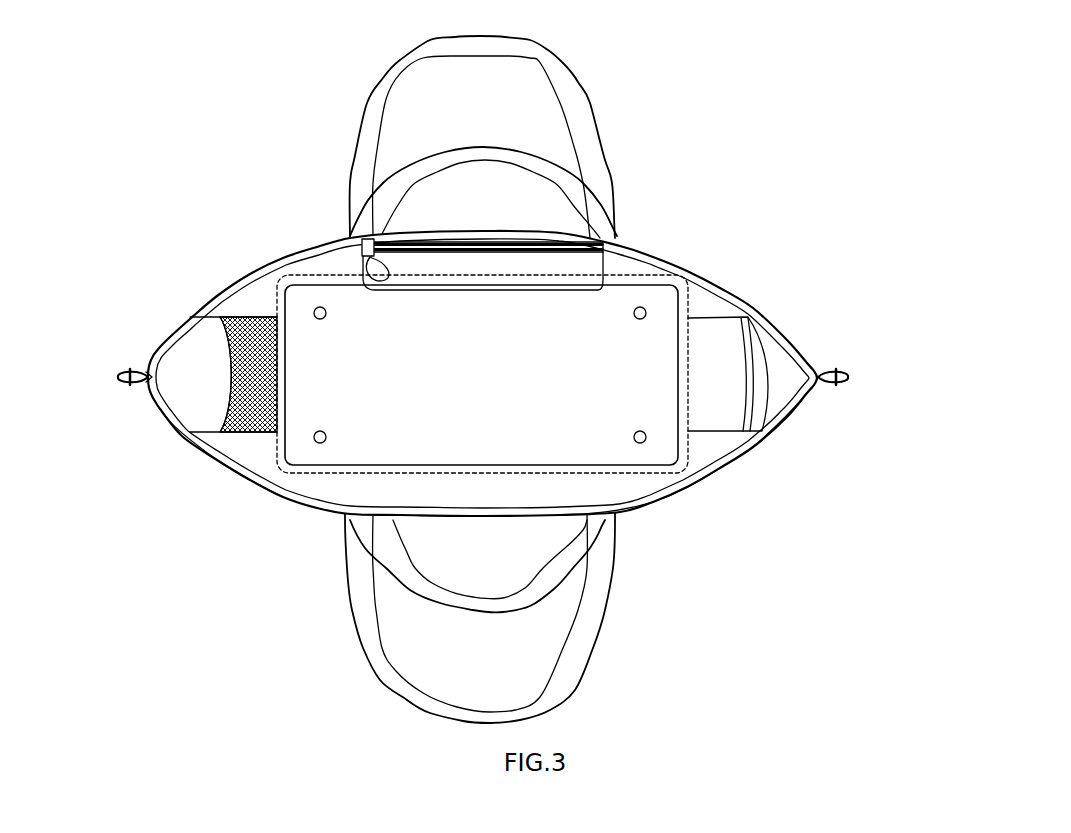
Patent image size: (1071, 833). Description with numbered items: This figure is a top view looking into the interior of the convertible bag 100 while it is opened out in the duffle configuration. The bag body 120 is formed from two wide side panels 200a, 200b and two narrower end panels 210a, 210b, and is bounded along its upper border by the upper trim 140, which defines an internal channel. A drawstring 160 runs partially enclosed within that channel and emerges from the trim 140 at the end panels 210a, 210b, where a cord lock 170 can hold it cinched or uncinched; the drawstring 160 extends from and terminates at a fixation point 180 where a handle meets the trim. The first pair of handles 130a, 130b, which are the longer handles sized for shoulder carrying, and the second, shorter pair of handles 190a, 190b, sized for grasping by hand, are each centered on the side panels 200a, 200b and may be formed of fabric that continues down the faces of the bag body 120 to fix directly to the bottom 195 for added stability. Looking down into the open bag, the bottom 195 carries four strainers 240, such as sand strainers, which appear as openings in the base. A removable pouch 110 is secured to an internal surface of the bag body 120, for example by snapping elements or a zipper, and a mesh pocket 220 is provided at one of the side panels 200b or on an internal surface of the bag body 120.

The convertible bag 100 is at (858, 168).
The removable pouch 110 is at (318, 243).
The bag body 120 is at (247, 481).
The first handle 130a is at (372, 652).
The first handle 130b is at (560, 62).
The upper trim 140 is at (689, 492).
The drawstring 160 is at (116, 375).
The cord lock 170 is at (132, 368).
The fixation point 180 is at (640, 516).
The second handle 190a is at (484, 599).
The second handle 190b is at (490, 158).
The bottom 195 is at (345, 447).
The side panel 200a is at (733, 460).
The side panel 200b is at (683, 260).
The end panel 210a is at (160, 407).
The end panel 210b is at (806, 404).
The mesh pocket 220 is at (230, 431).
The strainer 240 is at (316, 307).